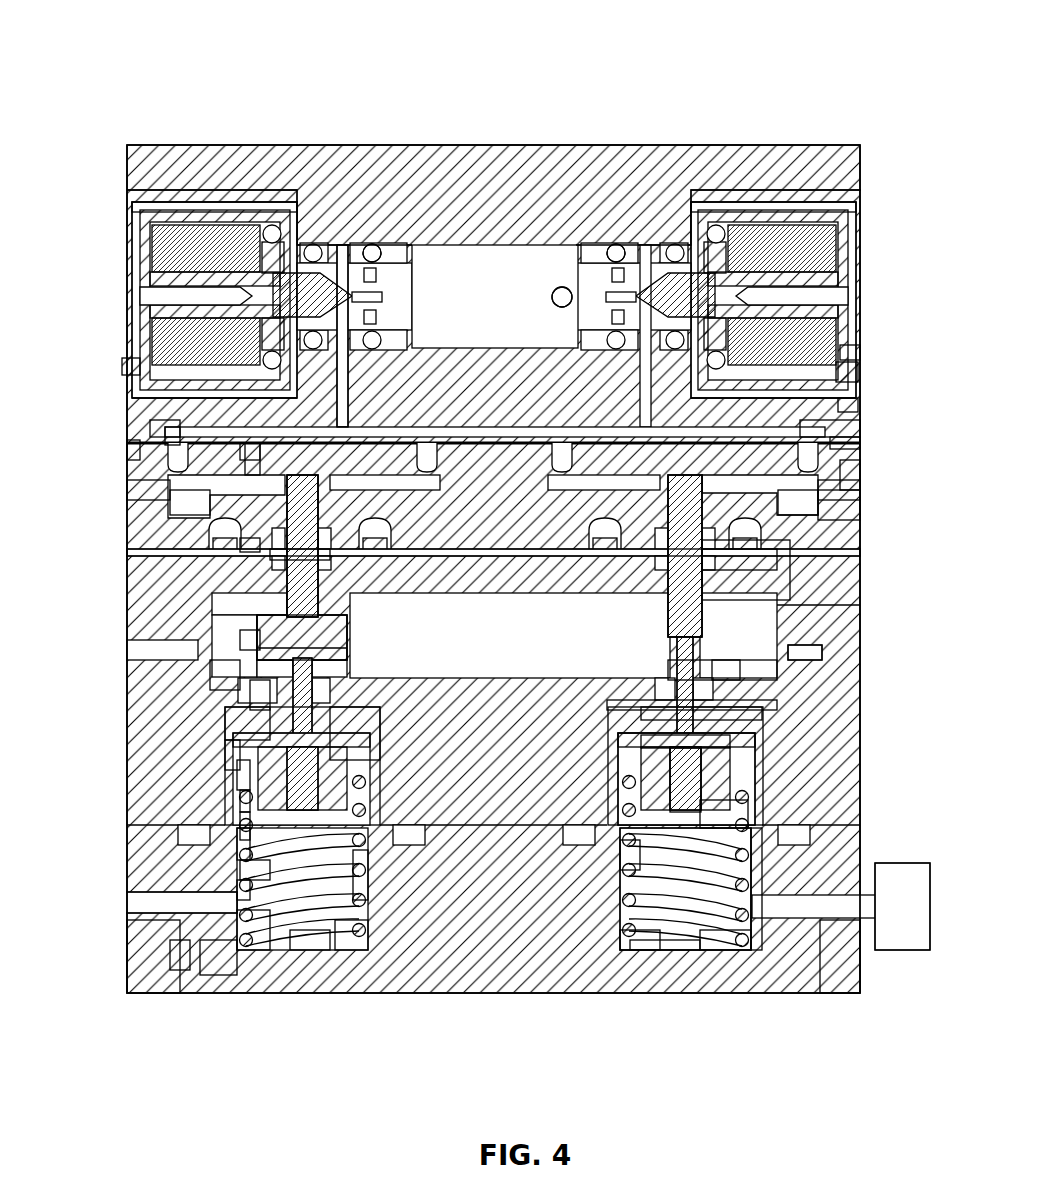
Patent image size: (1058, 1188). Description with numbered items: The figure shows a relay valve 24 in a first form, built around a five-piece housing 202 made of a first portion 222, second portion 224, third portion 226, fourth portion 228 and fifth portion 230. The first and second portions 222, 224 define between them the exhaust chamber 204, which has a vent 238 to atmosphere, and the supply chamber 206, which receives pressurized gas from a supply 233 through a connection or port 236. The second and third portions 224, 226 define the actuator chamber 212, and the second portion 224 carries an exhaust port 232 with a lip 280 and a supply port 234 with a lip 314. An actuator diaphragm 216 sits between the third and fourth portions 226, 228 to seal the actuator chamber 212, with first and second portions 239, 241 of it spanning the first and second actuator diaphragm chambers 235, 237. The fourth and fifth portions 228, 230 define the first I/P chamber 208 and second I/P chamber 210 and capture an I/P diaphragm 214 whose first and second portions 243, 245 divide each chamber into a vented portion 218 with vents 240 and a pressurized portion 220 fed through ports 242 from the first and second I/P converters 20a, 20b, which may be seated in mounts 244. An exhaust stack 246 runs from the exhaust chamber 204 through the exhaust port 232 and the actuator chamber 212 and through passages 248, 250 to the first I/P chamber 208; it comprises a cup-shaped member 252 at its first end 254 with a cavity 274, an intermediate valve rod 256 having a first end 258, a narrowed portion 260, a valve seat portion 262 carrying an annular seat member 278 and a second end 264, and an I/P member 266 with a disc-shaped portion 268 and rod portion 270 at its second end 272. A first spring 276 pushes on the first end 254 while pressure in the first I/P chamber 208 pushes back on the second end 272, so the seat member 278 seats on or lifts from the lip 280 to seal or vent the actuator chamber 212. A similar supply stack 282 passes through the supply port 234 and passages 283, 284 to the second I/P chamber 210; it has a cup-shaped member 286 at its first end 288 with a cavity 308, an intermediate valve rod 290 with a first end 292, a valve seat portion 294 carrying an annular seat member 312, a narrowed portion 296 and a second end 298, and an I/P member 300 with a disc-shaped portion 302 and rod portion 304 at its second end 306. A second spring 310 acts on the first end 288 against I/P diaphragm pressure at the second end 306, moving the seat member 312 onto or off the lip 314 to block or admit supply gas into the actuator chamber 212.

The relay valve 24 is at (116, 42).
The fifth portion 230 is at (127, 147).
The housing 202 is at (200, 147).
The cavities or mounts 244 is at (246, 147).
The passages or ports 242 is at (403, 243).
The first portion of the I/P diaphragm 243 is at (410, 437).
The second portion of the I/P diaphragm 245 is at (587, 450).
The first I/P converter 20a is at (150, 243).
The second I/P converter 20b is at (840, 258).
The second end of the I/P member 306 is at (840, 352).
The I/P member 300 is at (850, 372).
The pressurized portion 220 is at (125, 366).
The second I/P chamber 210 is at (830, 428).
The disc-shaped portion 302 is at (850, 443).
The I/P diaphragm 214 is at (850, 478).
The vents 240 is at (840, 495).
The passage 284 is at (850, 505).
The vented portion 218 is at (820, 530).
The rod portion 304 is at (780, 548).
The second actuator diaphragm chamber 237 is at (740, 560).
The actuator diaphragm 216 is at (760, 555).
The second portion of the actuator diaphragm 241 is at (770, 610).
The passage 283 is at (703, 595).
The second end of the intermediate valve rod 298 is at (700, 670).
The narrowed portion 296 is at (740, 675).
The supply port 234 is at (740, 700).
The lip or rim 314 is at (735, 715).
The annular seat member 312 is at (735, 740).
The intermediate valve rod 290 is at (713, 740).
The valve seat portion 294 is at (697, 813).
The first end of the intermediate valve rod 292 is at (733, 813).
The supply 233 is at (903, 950).
The connection/port 236 is at (840, 940).
The supply stack 282 is at (760, 950).
The second spring 310 is at (720, 940).
The supply chamber 206 is at (690, 935).
The cavity 308 is at (662, 950).
The cup-shaped member 286 is at (645, 935).
The first end of the supply stack 288 is at (625, 850).
The exhaust stack 246 is at (178, 960).
The exhaust chamber 204 is at (218, 960).
The first end of the exhaust stack 254 is at (262, 935).
The first spring 276 is at (305, 940).
The cup-shaped member 252 is at (349, 935).
The cavity 274 is at (362, 870).
The lip or rim 280 is at (355, 730).
The first portion 222 is at (135, 950).
The vent 238 is at (140, 905).
The first end of the intermediate valve rod 258 is at (245, 890).
The intermediate valve rod 256 is at (255, 870).
The narrowed portion 260 is at (240, 850).
The exhaust port 232 is at (245, 830).
The second portion 224 is at (245, 800).
The annular seat member 278 is at (240, 775).
The valve seat portion 262 is at (235, 760).
The actuator chamber 212 is at (260, 735).
The passage 248 is at (260, 700).
The second end of the intermediate valve rod 264 is at (230, 680).
The third portion 226 is at (260, 655).
The first portion of the actuator diaphragm 239 is at (250, 640).
The first actuator diaphragm chamber 235 is at (310, 593).
The passage 250 is at (290, 560).
The rod portion 270 is at (250, 548).
The fourth portion 228 is at (120, 452).
The I/P member 266 is at (170, 440).
The first I/P chamber 208 is at (165, 432).
The second end of the I/P member 272 is at (245, 450).
The disc-shaped portion 268 is at (250, 450).